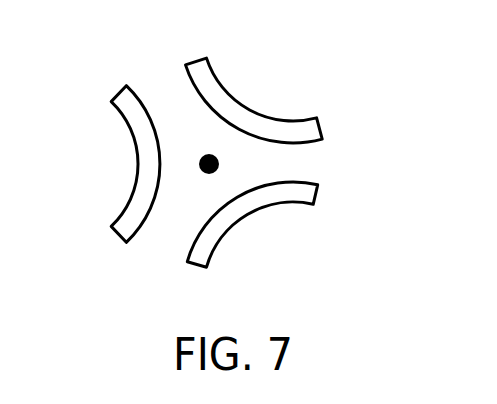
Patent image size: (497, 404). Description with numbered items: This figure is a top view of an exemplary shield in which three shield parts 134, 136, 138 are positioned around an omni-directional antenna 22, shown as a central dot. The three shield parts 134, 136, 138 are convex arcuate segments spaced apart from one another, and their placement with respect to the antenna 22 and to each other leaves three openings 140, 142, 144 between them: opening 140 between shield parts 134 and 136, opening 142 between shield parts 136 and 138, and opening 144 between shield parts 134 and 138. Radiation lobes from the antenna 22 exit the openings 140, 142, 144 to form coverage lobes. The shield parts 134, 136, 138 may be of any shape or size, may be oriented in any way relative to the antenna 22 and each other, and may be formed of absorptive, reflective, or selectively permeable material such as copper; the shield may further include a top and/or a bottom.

The omni-directional antenna 22 is at (212, 159).
The shield part 134 is at (116, 99).
The shield part 136 is at (209, 62).
The shield part 138 is at (307, 204).
The opening 140 is at (165, 75).
The opening 142 is at (327, 163).
The opening 144 is at (167, 255).